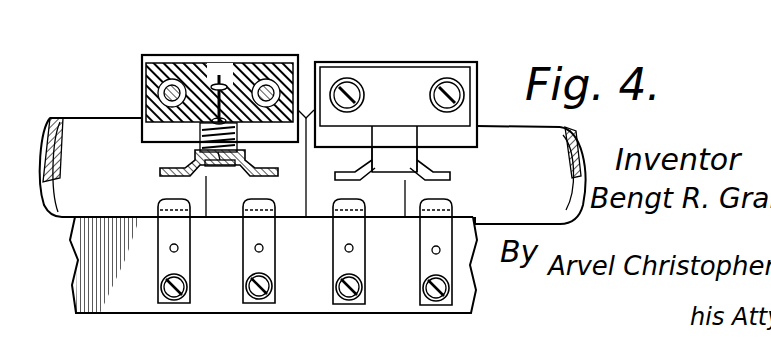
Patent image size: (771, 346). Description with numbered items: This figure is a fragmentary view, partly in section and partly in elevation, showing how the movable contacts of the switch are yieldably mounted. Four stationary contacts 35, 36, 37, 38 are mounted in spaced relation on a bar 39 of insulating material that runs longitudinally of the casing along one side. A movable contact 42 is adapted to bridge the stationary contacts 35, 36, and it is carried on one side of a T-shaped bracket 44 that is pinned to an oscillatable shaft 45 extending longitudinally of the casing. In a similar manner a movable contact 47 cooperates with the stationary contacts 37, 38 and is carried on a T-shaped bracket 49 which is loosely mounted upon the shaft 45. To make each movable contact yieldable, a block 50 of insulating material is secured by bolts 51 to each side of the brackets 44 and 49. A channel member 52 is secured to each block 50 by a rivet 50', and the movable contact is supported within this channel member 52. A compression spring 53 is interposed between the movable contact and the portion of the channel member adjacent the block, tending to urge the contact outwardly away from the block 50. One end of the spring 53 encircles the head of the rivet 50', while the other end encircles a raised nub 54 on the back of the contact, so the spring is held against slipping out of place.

The stationary contact 35 is at (440, 200).
The stationary contact 36 is at (345, 198).
The stationary contact 37 is at (265, 200).
The stationary contact 38 is at (168, 200).
The bar of insulating material 39 is at (100, 262).
The movable contact 42 is at (450, 175).
The T-shaped bracket 44 is at (381, 198).
The oscillatable shaft 45 is at (38, 132).
The movable contact 47 is at (175, 173).
The T-shaped bracket 49 is at (224, 207).
The block of insulating material 50 is at (309, 84).
The rivet 50' is at (238, 68).
The bolt 51 is at (160, 90).
The channel member 52 is at (195, 159).
The compression spring 53 is at (200, 136).
The raised nub 54 is at (221, 152).